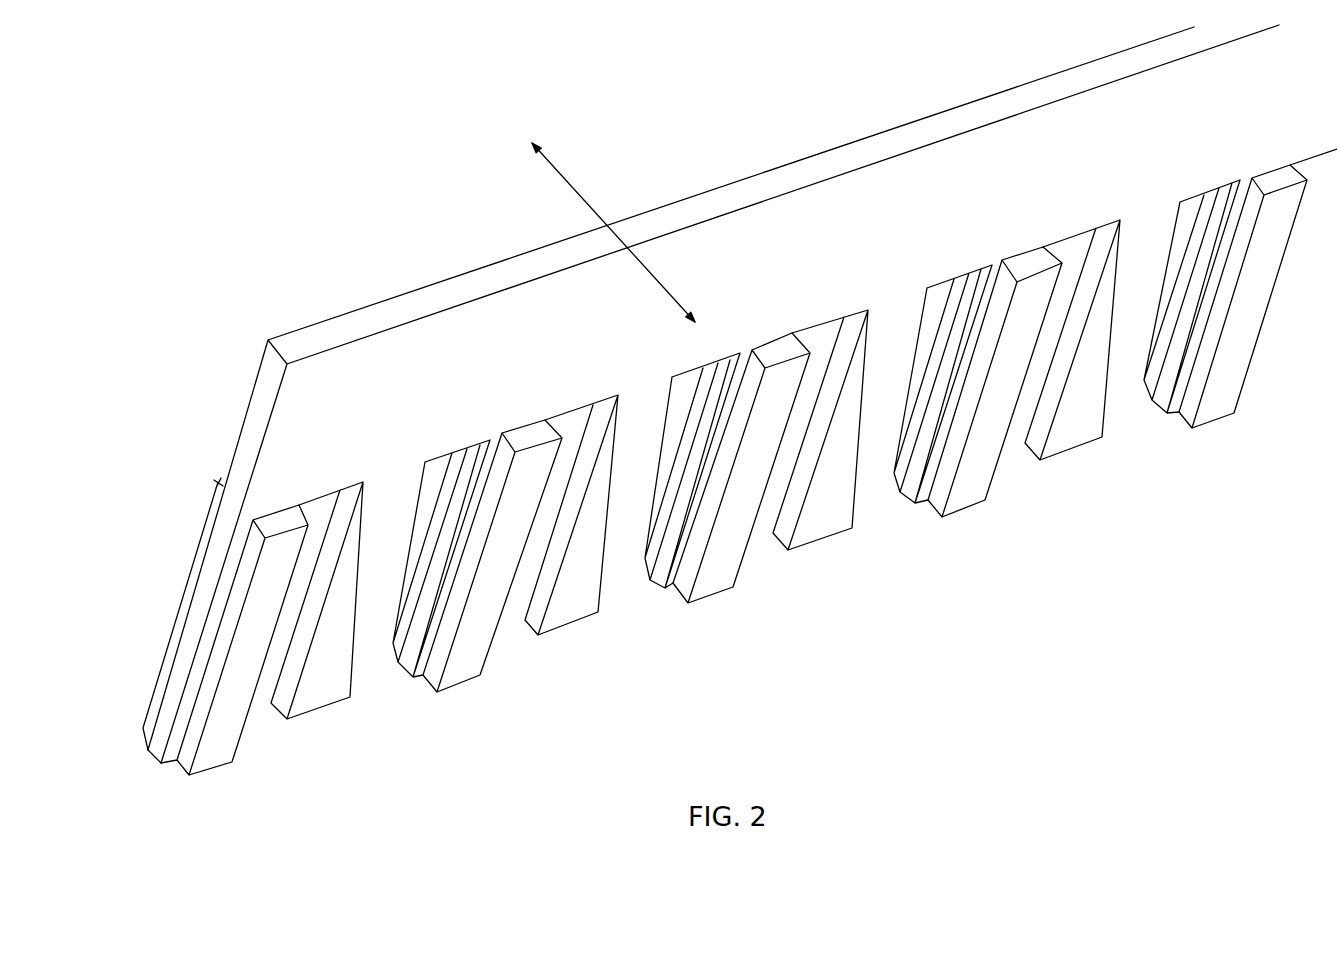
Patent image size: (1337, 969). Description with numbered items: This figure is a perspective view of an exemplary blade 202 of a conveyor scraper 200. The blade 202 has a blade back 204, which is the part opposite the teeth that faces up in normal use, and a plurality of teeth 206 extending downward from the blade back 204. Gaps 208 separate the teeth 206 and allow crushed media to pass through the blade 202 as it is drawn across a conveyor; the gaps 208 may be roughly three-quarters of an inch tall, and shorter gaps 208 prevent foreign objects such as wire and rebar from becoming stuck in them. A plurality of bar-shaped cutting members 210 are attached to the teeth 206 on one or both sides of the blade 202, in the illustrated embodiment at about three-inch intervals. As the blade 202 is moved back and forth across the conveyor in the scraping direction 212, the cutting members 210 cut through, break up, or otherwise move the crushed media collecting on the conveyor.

The conveyor scraper 200 is at (222, 146).
The blade 202 is at (230, 314).
The blade back 204 is at (815, 246).
The teeth 206 is at (823, 520).
The gaps 208 is at (635, 597).
The cutting members 210 is at (723, 565).
The scraping direction 212 is at (570, 182).